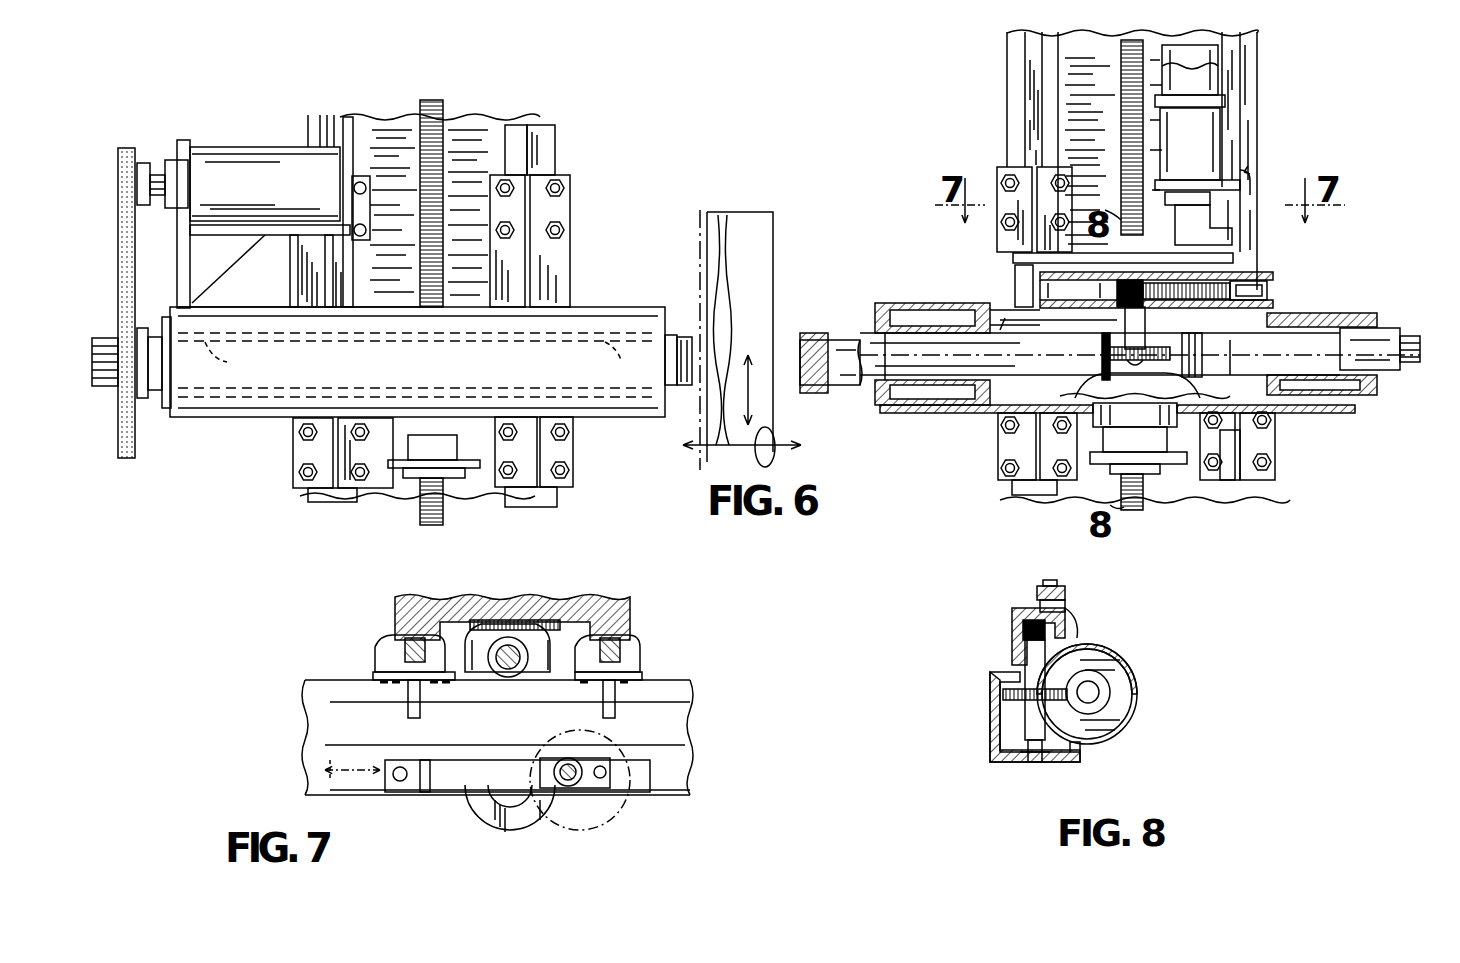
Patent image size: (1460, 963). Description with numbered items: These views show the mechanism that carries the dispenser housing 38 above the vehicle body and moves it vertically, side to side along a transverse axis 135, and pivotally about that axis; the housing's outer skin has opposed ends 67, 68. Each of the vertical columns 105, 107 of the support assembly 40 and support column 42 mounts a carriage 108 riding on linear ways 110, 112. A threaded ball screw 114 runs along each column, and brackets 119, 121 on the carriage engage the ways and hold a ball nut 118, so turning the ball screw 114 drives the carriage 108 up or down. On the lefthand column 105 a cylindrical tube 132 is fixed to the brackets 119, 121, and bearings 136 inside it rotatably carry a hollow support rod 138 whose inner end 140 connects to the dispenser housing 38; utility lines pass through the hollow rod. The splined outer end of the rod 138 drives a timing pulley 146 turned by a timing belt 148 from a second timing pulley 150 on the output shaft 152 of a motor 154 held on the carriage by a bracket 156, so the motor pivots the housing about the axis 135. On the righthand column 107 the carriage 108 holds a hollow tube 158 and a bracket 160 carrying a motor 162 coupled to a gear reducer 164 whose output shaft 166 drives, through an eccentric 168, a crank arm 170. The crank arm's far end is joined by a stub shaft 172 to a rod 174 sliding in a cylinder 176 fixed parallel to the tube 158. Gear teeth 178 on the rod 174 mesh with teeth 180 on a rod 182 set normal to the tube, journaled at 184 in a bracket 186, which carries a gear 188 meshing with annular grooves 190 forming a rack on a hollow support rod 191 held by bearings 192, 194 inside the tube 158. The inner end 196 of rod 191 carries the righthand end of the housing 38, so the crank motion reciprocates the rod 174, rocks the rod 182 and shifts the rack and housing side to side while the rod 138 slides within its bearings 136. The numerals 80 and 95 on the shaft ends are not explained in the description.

In FIG. 6, the dispenser housing 38 is at (771, 192).
In FIG. 6, the support assembly 40 is at (506, 96).
In FIG. 6, the support column 42 is at (1259, 514).
In FIG. 7, the support column 42 is at (658, 594).
In FIG. 6, the end of outer skin 67 is at (690, 214).
In FIG. 6, the end of outer skin 68 is at (790, 278).
In FIG. 6, the drive shaft 80 is at (816, 334).
In FIG. 6, the shaft end 95 is at (818, 386).
In FIG. 6, the vertical column 105 is at (474, 116).
In FIG. 6, the vertical column 107 is at (1270, 75).
In FIG. 7, the vertical column 107 is at (636, 613).
In FIG. 6, the carriage 108 is at (595, 259).
In FIG. 7, the carriage 108 is at (671, 666).
In FIG. 6, the linear way 110 is at (329, 116).
In FIG. 7, the linear way 110 is at (635, 650).
In FIG. 6, the linear way 112 is at (540, 128).
In FIG. 7, the linear way 112 is at (380, 653).
In FIG. 6, the threaded ball screw 114 is at (428, 108).
In FIG. 7, the threaded ball screw 114 is at (511, 676).
In FIG. 6, the ball nut 118 is at (400, 478).
In FIG. 7, the ball nut 118 is at (538, 612).
In FIG. 6, the bracket 119 is at (318, 308).
In FIG. 7, the bracket 119 is at (600, 700).
In FIG. 6, the bracket 121 is at (550, 422).
In FIG. 7, the bracket 121 is at (372, 676).
In FIG. 6, the cylindrical tube 132 is at (600, 302).
In FIG. 6, the transverse axis 135 is at (722, 446).
In FIG. 6, the bearings 136 is at (418, 365).
In FIG. 6, the hollow support rod 138 is at (412, 345).
In FIG. 6, the inner end of support rod 140 is at (712, 394).
In FIG. 6, the timing pulley 146 is at (140, 400).
In FIG. 6, the timing belt 148 is at (123, 296).
In FIG. 6, the second timing pulley 150 is at (146, 164).
In FIG. 6, the output shaft 152 is at (172, 186).
In FIG. 6, the motor 154 is at (253, 148).
In FIG. 6, the bracket 156 is at (270, 232).
In FIG. 6, the hollow tube 158 is at (1338, 296).
In FIG. 7, the hollow tube 158 is at (695, 724).
In FIG. 8, the hollow tube 158 is at (1142, 676).
In FIG. 6, the bracket 160 is at (1252, 178).
In FIG. 6, the motor 162 is at (1222, 92).
In FIG. 6, the gear reducer 164 is at (1222, 138).
In FIG. 6, the output shaft 166 is at (1186, 186).
In FIG. 7, the output shaft 166 is at (576, 787).
In FIG. 6, the eccentric 168 is at (1235, 240).
In FIG. 7, the eccentric 168 is at (595, 760).
In FIG. 6, the crank arm 170 is at (1235, 262).
In FIG. 7, the crank arm 170 is at (443, 774).
In FIG. 8, the crank arm 170 is at (1066, 595).
In FIG. 6, the stub shaft 172 is at (1015, 272).
In FIG. 8, the stub shaft 172 is at (1065, 607).
In FIG. 6, the rod 174 is at (1045, 322).
In FIG. 8, the rod 174 is at (1078, 629).
In FIG. 6, the cylinder 176 is at (1276, 282).
In FIG. 8, the cylinder 176 is at (1130, 641).
In FIG. 6, the gear teeth 178 is at (1212, 320).
In FIG. 8, the gear teeth 178 is at (1012, 630).
In FIG. 6, the teeth 180 is at (1093, 300).
In FIG. 8, the teeth 180 is at (1022, 639).
In FIG. 6, the rod 182 is at (1080, 335).
In FIG. 8, the rod 182 is at (1025, 673).
In FIG. 8, the journal 184 is at (1035, 760).
In FIG. 7, the bracket 186 is at (510, 830).
In FIG. 8, the bracket 186 is at (990, 750).
In FIG. 6, the gear 188 is at (1095, 390).
In FIG. 8, the gear 188 is at (1015, 716).
In FIG. 6, the annular grooves 190 is at (1208, 386).
In FIG. 8, the annular grooves 190 is at (1100, 706).
In FIG. 6, the support rod 191 is at (1100, 354).
In FIG. 8, the support rod 191 is at (1105, 713).
In FIG. 6, the bearing 192 is at (905, 410).
In FIG. 6, the bearing 194 is at (1300, 390).
In FIG. 6, the inner end of rod 196 is at (783, 310).